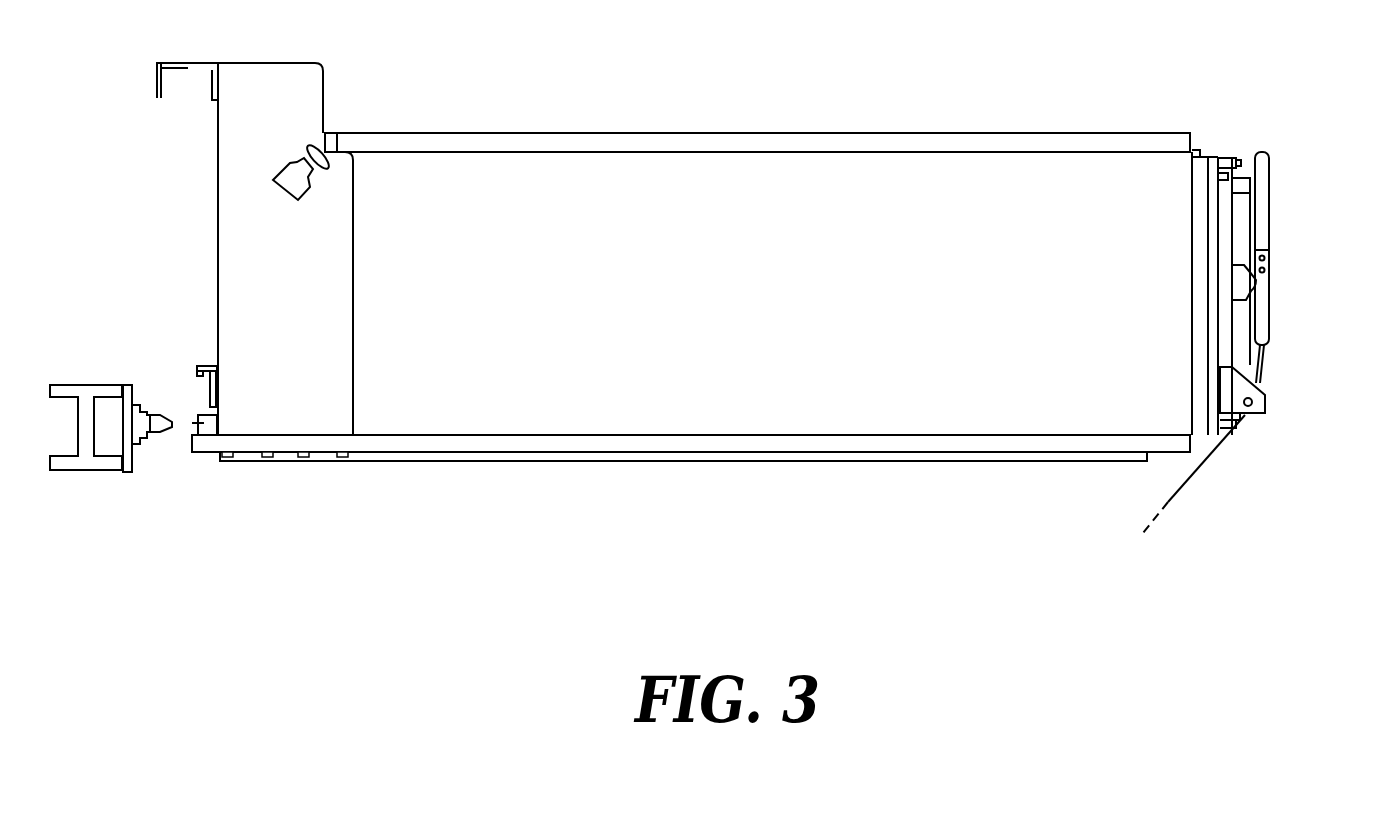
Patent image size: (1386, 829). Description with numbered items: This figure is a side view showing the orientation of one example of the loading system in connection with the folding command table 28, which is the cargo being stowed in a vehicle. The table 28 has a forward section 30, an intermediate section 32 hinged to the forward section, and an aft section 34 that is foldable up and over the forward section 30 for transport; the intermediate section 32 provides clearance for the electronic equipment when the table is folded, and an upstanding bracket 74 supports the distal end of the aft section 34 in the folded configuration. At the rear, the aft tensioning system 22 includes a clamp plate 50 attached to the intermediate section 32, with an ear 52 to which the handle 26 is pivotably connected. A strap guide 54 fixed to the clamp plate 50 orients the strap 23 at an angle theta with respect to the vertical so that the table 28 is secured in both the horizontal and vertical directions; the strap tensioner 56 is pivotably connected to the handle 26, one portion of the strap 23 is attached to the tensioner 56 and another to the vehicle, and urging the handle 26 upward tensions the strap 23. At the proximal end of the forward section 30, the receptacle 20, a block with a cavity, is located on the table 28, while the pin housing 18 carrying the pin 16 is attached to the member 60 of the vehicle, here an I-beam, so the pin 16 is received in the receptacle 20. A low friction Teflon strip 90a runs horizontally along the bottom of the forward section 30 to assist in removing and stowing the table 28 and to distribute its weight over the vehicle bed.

The pin 16 is at (154, 418).
The pin housing 18 is at (143, 412).
The receptacle 20 is at (201, 422).
The aft tensioning system 22 is at (1240, 327).
The strap 23 is at (1207, 470).
The handle 26 is at (1266, 172).
The foldable command table 28 is at (678, 278).
The forward section 30 is at (778, 434).
The intermediate section 32 is at (1203, 258).
The aft section 34 is at (912, 142).
The clamp plate 50 is at (1225, 330).
The ear 52 is at (1272, 283).
The strap guide 54 is at (1270, 400).
The strap tensioner 56 is at (1270, 318).
The member 60 is at (77, 385).
The upstanding bracket 74 is at (330, 282).
The low friction Teflon strip 90a is at (535, 462).